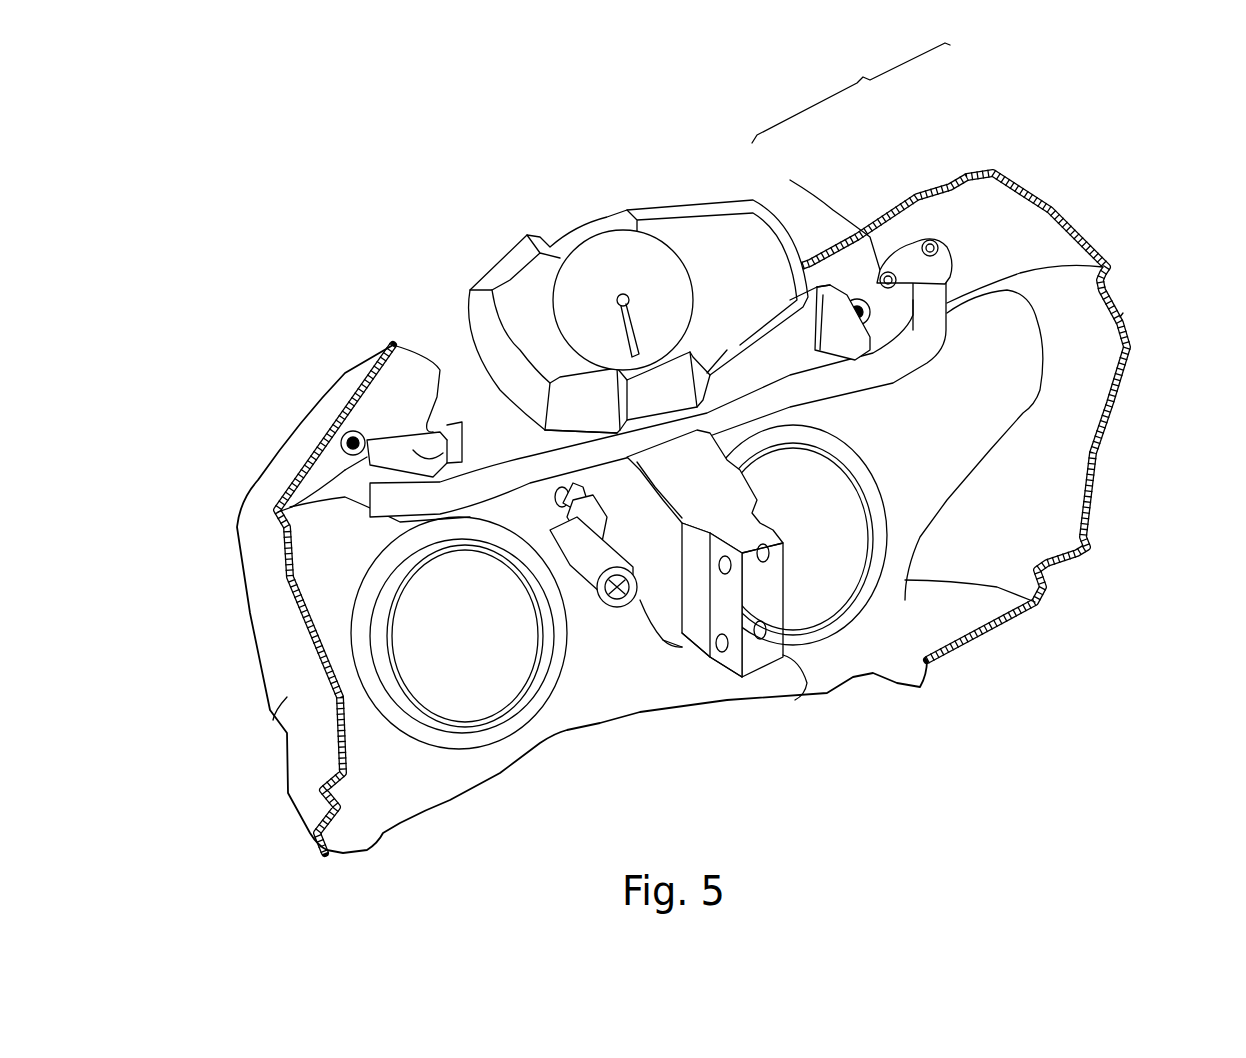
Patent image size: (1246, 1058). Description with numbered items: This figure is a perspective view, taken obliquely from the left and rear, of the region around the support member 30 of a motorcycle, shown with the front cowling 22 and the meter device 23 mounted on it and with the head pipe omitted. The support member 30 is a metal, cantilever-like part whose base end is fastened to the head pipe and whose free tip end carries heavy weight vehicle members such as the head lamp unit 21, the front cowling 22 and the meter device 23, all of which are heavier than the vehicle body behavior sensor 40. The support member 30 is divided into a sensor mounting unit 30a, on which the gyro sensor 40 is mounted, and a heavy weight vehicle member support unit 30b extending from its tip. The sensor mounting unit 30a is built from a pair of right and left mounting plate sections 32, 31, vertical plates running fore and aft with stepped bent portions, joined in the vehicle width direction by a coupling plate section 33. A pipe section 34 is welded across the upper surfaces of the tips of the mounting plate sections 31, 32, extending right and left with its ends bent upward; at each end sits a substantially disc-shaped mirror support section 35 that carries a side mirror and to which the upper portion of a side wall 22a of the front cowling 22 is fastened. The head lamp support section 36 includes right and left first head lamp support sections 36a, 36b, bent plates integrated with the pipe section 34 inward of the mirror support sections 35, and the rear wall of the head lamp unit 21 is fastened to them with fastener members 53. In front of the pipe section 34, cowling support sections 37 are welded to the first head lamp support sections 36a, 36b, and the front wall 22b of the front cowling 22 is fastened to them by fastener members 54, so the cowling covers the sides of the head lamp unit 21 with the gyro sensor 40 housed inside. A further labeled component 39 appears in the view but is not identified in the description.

The head lamp unit 21 is at (563, 723).
The front cowling 22 is at (1085, 233).
The side walls 22a is at (1123, 313).
The front wall 22b is at (413, 368).
The meter device 23 is at (721, 197).
The support member 30 is at (893, 383).
The sensor mounting unit 30a is at (663, 640).
The heavy weight vehicle member support unit 30b is at (851, 92).
The mounting plate section 31 is at (697, 640).
The mounting plate section 32 is at (783, 655).
The coupling plate section 33 is at (753, 663).
The pipe section 34 is at (930, 347).
The mirror support section 35 is at (925, 235).
The head lamp support section 36 is at (823, 286).
The first head lamp support section 36a is at (817, 287).
The first head lamp support section 36b is at (430, 477).
The cowling support section 37 is at (363, 427).
The mounting plate 39 is at (553, 440).
The vehicle body behavior sensor 40 is at (593, 603).
The fastener members 53 is at (447, 425).
The fastener members 54 is at (872, 270).